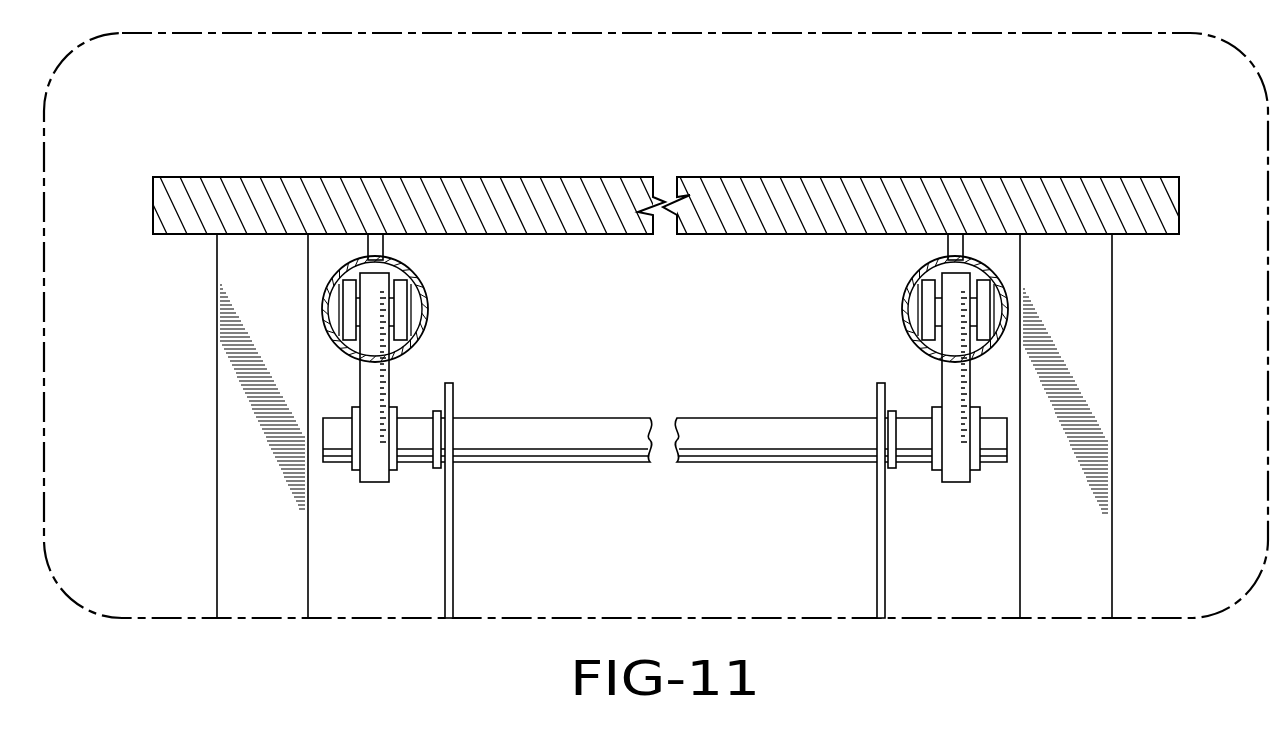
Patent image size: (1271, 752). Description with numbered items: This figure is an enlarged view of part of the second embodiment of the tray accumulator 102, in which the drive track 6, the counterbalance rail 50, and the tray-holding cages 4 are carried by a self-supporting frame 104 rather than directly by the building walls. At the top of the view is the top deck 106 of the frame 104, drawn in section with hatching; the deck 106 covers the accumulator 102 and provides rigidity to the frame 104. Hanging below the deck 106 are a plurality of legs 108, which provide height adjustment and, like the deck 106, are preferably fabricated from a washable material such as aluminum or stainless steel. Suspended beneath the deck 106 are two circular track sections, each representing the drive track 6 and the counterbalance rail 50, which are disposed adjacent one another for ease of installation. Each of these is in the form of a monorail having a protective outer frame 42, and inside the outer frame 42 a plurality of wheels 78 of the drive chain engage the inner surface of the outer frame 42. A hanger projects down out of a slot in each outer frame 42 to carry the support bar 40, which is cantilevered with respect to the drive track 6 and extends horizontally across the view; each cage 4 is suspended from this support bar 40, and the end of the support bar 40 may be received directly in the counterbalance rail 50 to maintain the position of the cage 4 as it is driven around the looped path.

The tray-holding cage 4 is at (440, 561).
The drive track 6 is at (900, 280).
The support bar 40 is at (567, 425).
The outer frame 42 is at (427, 305).
The counterbalance rail 50 is at (435, 274).
The wheel 78 is at (342, 297).
The tray accumulator 102 is at (856, 146).
The frame 104 is at (216, 404).
The top deck 106 is at (397, 186).
The leg 108 is at (244, 478).